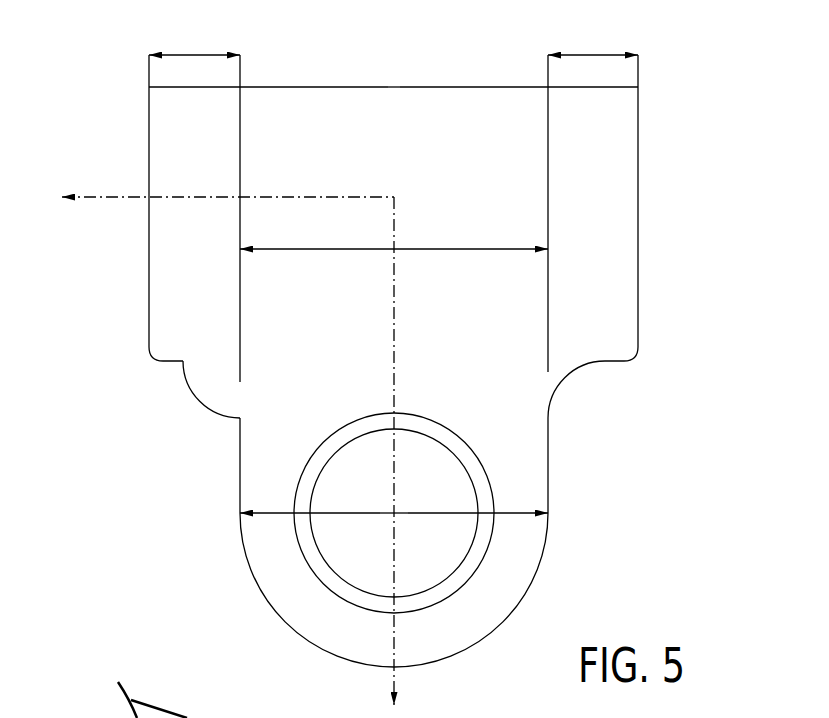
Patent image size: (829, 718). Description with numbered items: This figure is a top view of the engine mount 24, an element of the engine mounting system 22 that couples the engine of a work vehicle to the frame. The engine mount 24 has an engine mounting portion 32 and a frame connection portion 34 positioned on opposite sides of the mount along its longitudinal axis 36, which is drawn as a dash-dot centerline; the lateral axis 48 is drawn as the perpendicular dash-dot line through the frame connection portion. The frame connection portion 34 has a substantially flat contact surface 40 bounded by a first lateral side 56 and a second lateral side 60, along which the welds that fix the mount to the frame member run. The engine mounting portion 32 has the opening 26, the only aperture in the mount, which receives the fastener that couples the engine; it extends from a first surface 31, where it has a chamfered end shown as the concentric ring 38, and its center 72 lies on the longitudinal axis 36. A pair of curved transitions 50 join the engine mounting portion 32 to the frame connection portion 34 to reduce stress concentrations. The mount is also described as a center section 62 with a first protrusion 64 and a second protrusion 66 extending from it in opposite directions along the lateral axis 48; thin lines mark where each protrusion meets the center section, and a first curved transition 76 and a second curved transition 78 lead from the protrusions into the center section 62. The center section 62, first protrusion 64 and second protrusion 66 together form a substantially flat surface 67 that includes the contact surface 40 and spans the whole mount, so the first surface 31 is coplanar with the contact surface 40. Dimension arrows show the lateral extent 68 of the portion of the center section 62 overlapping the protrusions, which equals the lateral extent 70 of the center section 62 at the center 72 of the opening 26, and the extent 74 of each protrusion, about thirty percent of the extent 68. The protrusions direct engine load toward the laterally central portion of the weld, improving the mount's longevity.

The engine mounting system 22 is at (575, 407).
The engine mount 24 is at (515, 607).
The opening 26 is at (463, 563).
The first surface 31 is at (288, 589).
The engine mounting portion 32 is at (213, 495).
The frame connection portion 34 is at (130, 262).
The longitudinal axis 36 is at (393, 310).
The ring 38 is at (437, 430).
The substantially flat contact surface 40 is at (340, 100).
The lateral axis 48 is at (316, 198).
The curved transitions 50 is at (411, 396).
The first lateral side 56 is at (130, 180).
The second lateral side 60 is at (662, 218).
The center section 62 is at (448, 100).
The first protrusion 64 is at (158, 108).
The second protrusion 66 is at (622, 117).
The substantially flat surface 67 is at (387, 102).
The lateral extent 68 is at (462, 248).
The lateral extent 70 is at (464, 512).
The center 72 is at (393, 512).
The extent 74 is at (195, 53).
The first curved transition 76 is at (208, 382).
The second curved transition 78 is at (618, 375).